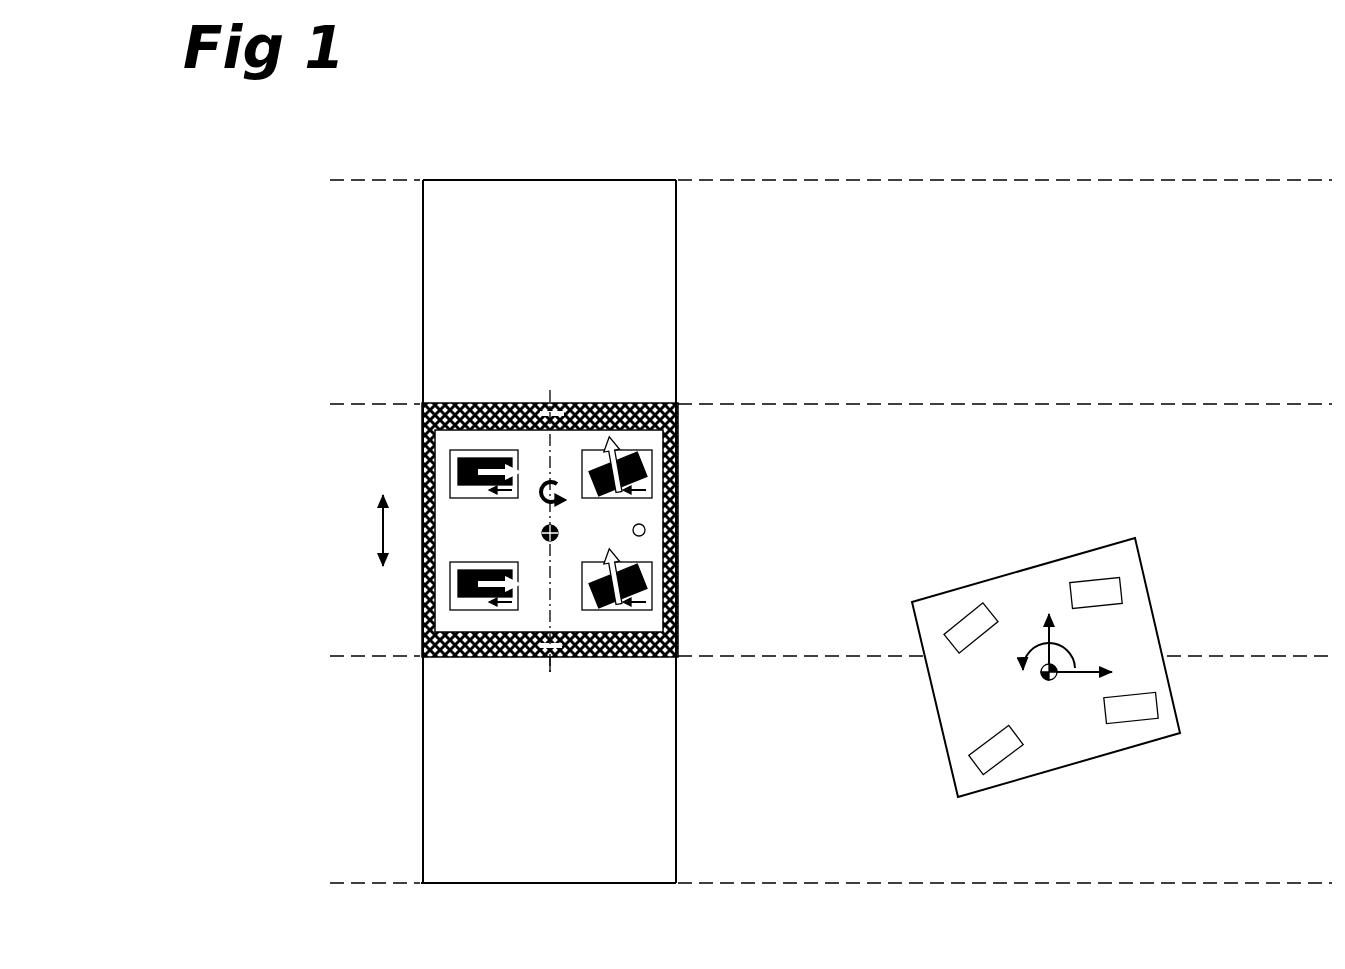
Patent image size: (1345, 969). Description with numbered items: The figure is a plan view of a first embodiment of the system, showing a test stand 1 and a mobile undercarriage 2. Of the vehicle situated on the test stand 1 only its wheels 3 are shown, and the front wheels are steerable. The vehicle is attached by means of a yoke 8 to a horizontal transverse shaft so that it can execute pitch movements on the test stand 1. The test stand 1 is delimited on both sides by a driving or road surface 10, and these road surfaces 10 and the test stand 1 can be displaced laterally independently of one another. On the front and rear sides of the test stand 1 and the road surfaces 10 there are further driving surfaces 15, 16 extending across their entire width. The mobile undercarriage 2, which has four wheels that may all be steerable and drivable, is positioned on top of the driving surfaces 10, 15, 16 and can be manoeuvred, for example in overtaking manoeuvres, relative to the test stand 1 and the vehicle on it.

The test stand 1 is at (487, 532).
The mobile undercarriage 2 is at (1170, 585).
The wheels 3 is at (463, 452).
The yoke 8 is at (549, 657).
The driving surface 10 is at (623, 230).
The driving surface 15 is at (813, 277).
The driving surface 16 is at (362, 277).